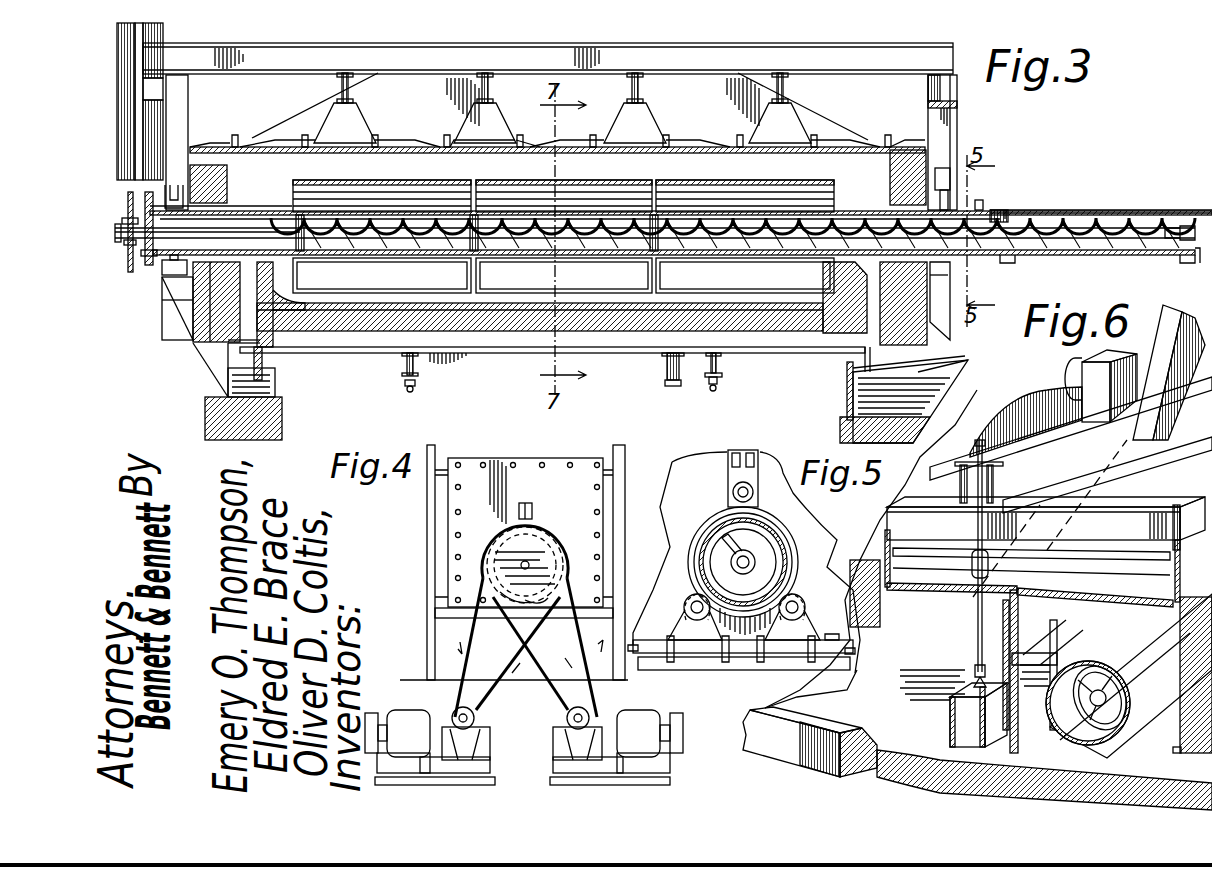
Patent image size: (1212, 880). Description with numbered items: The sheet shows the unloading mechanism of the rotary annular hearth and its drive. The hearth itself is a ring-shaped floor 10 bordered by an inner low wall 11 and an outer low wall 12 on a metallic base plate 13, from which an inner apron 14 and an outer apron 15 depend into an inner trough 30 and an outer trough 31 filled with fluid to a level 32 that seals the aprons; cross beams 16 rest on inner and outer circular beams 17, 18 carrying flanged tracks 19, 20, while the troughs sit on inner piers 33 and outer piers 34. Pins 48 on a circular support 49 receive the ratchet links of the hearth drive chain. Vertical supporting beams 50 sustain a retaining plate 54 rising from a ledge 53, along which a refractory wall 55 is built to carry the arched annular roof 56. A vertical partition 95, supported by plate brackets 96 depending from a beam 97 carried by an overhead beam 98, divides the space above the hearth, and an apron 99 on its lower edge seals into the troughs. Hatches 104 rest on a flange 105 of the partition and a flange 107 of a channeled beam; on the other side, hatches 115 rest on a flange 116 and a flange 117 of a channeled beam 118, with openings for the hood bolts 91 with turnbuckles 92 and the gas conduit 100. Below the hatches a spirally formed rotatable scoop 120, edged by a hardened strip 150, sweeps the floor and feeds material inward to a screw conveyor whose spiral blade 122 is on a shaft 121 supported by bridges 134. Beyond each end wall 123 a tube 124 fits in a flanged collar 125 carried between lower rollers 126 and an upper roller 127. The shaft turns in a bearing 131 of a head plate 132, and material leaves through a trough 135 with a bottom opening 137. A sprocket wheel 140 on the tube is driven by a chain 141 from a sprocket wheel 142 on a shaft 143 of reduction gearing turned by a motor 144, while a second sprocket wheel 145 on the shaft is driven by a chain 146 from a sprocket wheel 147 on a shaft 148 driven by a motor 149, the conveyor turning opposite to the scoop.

In FIG. 3, the overhead beam 98 is at (687, 45).
In FIG. 6, the overhead beam 98 is at (1071, 451).
In FIG. 3, the supporting beam 50 is at (118, 124).
In FIG. 3, the beam 97 is at (349, 94).
In FIG. 3, the plate bracket 96 is at (352, 118).
In FIG. 6, the plate bracket 96 is at (1074, 513).
In FIG. 3, the arched annular roof 56 is at (304, 112).
In FIG. 6, the arched annular roof 56 is at (1019, 394).
In FIG. 3, the hatch 104 is at (428, 147).
In FIG. 3, the flange 105 is at (577, 158).
In FIG. 6, the flange 105 is at (1030, 593).
In FIG. 6, the vertical partition 95 is at (1012, 645).
In FIG. 3, the spirally formed rotatable scoop 120 is at (688, 179).
In FIG. 6, the spirally formed rotatable scoop 120 is at (1063, 733).
In FIG. 3, the tube 124 is at (239, 209).
In FIG. 3, the end wall 123 is at (296, 201).
In FIG. 3, the rotatable shaft 121 is at (236, 228).
In FIG. 5, the rotatable shaft 121 is at (745, 551).
In FIG. 6, the rotatable shaft 121 is at (1100, 706).
In FIG. 3, the spiral blade 122 is at (702, 245).
In FIG. 5, the spiral blade 122 is at (768, 558).
In FIG. 6, the spiral blade 122 is at (1113, 666).
In FIG. 3, the bridge 134 is at (306, 252).
In FIG. 3, the ring-shaped floor 10 is at (522, 304).
In FIG. 6, the ring-shaped floor 10 is at (917, 747).
In FIG. 3, the metallic base plate 13 is at (490, 340).
In FIG. 3, the outer low wall 12 is at (842, 270).
In FIG. 6, the outer low wall 12 is at (780, 743).
In FIG. 3, the inner low wall 11 is at (275, 292).
In FIG. 3, the cross beam 16 is at (328, 347).
In FIG. 3, the inner apron 14 is at (266, 354).
In FIG. 3, the retaining plate 54 is at (165, 318).
In FIG. 3, the wall 55 is at (190, 325).
In FIG. 3, the sprocket wheel 140 is at (158, 278).
In FIG. 3, the fluid level 32 is at (225, 368).
In FIG. 3, the inner trough 30 is at (278, 383).
In FIG. 3, the inner pier 33 is at (283, 415).
In FIG. 3, the inner circular beam 17 is at (402, 362).
In FIG. 3, the inner flanged track 19 is at (406, 388).
In FIG. 3, the pin 48 is at (662, 366).
In FIG. 3, the circular support 49 is at (686, 386).
In FIG. 3, the outer circular beam 18 is at (723, 372).
In FIG. 3, the outer flanged track 20 is at (717, 392).
In FIG. 3, the outer apron 15 is at (852, 361).
In FIG. 3, the outer trough 31 is at (845, 383).
In FIG. 3, the outer pier 34 is at (840, 425).
In FIG. 3, the ledge 53 is at (920, 370).
In FIG. 3, the head plate 132 is at (124, 216).
In FIG. 3, the bearing 131 is at (157, 240).
In FIG. 3, the second sprocket wheel 145 is at (127, 258).
In FIG. 4, the second sprocket wheel 145 is at (538, 622).
In FIG. 3, the flanged collar 125 is at (168, 190).
In FIG. 4, the flanged collar 125 is at (546, 526).
In FIG. 3, the trough 135 is at (1094, 210).
In FIG. 3, the bottom opening 137 is at (1196, 260).
In FIG. 4, the upper roller 127 is at (512, 528).
In FIG. 5, the upper roller 127 is at (728, 498).
In FIG. 4, the lower roller 126 is at (487, 565).
In FIG. 5, the lower roller 126 is at (684, 597).
In FIG. 4, the chain 141 is at (512, 646).
In FIG. 4, the chain 146 is at (586, 640).
In FIG. 4, the sprocket wheel 142 is at (468, 707).
In FIG. 4, the shaft 143 is at (452, 712).
In FIG. 4, the motor 144 is at (414, 715).
In FIG. 4, the sprocket wheel 147 is at (585, 702).
In FIG. 4, the shaft 148 is at (590, 708).
In FIG. 4, the motor 149 is at (640, 716).
In FIG. 5, the channeled beam 118 is at (880, 545).
In FIG. 6, the apron 99 is at (970, 777).
In FIG. 6, the conduit 100 is at (1089, 353).
In FIG. 6, the turn buckle 92 is at (972, 570).
In FIG. 6, the bolt 91 is at (975, 645).
In FIG. 6, the hatch 115 is at (963, 602).
In FIG. 6, the flange 116 is at (985, 612).
In FIG. 6, the flange 117 is at (943, 693).
In FIG. 6, the flange 107 is at (1168, 632).
In FIG. 6, the strip 150 is at (1108, 754).